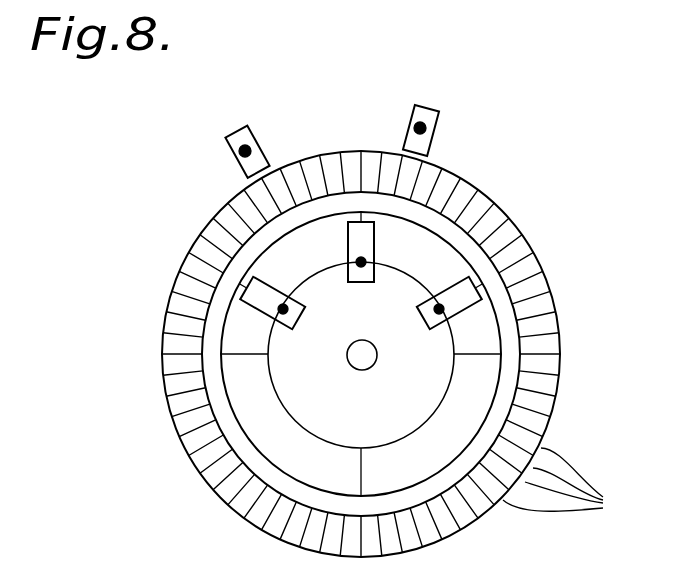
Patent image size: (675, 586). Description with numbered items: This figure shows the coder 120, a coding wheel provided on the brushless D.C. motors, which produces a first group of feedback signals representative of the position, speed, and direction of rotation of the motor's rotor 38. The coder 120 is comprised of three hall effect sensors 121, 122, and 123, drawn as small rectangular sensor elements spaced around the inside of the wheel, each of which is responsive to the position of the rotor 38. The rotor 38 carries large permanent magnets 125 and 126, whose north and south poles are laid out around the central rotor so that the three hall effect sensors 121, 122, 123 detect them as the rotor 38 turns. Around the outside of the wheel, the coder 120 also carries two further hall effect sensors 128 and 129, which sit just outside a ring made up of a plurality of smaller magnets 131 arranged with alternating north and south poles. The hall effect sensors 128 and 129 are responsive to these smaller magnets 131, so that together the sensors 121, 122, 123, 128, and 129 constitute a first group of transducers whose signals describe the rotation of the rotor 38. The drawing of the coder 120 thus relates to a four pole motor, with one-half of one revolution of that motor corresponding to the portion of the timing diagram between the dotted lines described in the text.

The rotor 38 is at (362, 362).
The coder 120 is at (534, 224).
The hall effect sensor 121 is at (291, 326).
The hall effect sensor 122 is at (355, 283).
The hall effect sensor 123 is at (432, 330).
The large permanent magnet 125 is at (300, 270).
The large permanent magnet 126 is at (452, 403).
The hall effect sensor 128 is at (228, 147).
The hall effect sensor 129 is at (432, 130).
The smaller magnets 131 is at (568, 482).